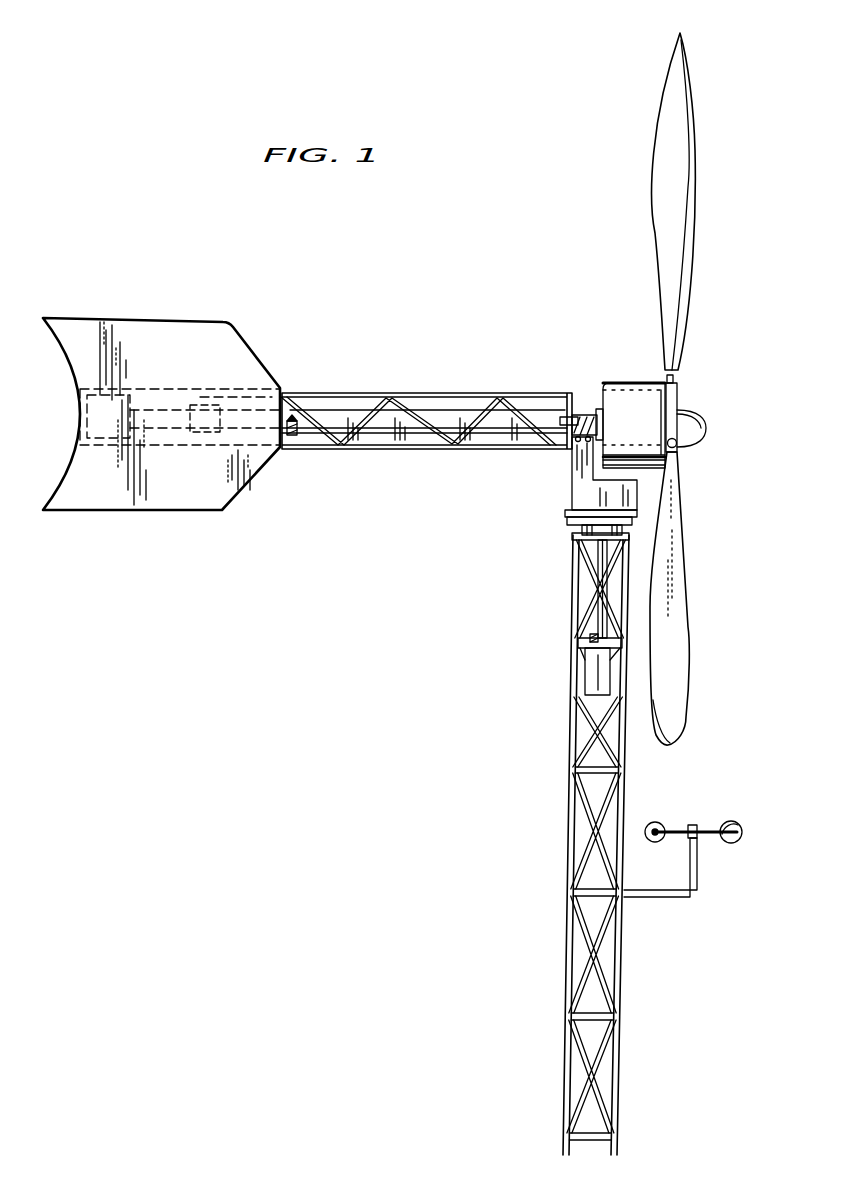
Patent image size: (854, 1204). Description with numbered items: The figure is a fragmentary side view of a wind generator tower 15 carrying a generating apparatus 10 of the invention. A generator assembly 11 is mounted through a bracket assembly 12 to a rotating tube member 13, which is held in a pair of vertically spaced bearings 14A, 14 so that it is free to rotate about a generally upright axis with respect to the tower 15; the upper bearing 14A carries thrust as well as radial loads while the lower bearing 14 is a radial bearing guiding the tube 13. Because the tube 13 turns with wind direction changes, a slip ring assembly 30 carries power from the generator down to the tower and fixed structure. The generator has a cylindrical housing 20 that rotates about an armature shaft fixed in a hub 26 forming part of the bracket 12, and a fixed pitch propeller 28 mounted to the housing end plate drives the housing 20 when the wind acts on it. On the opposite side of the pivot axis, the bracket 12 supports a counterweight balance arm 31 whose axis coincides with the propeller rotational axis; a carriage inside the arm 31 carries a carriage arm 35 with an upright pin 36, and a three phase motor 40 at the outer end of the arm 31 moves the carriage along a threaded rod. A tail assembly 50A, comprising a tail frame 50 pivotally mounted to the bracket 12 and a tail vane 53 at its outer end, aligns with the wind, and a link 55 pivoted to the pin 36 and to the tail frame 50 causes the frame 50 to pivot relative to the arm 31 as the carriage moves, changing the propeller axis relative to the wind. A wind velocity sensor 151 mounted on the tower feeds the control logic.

The generating apparatus 10 is at (544, 381).
The generator assembly 11 is at (636, 378).
The bracket assembly 12 is at (583, 492).
The rotating tube member 13 is at (598, 592).
The lower bearing 14 is at (587, 640).
The bearing 14A is at (567, 530).
The tower 15 is at (567, 995).
The cylindrical housing 20 is at (643, 413).
The hub 26 is at (585, 412).
The propeller 28 is at (690, 697).
The slip ring assembly 30 is at (593, 680).
The counterweight balance arm 31 is at (343, 415).
The carriage arm 35 is at (295, 436).
The upright pin 36 is at (294, 417).
The three phase motor 40 is at (195, 404).
The tail frame 50 is at (358, 450).
The tail assembly 50A is at (281, 474).
The tail vane 53 is at (177, 412).
The link 55 is at (405, 425).
The wind velocity sensor 151 is at (700, 862).